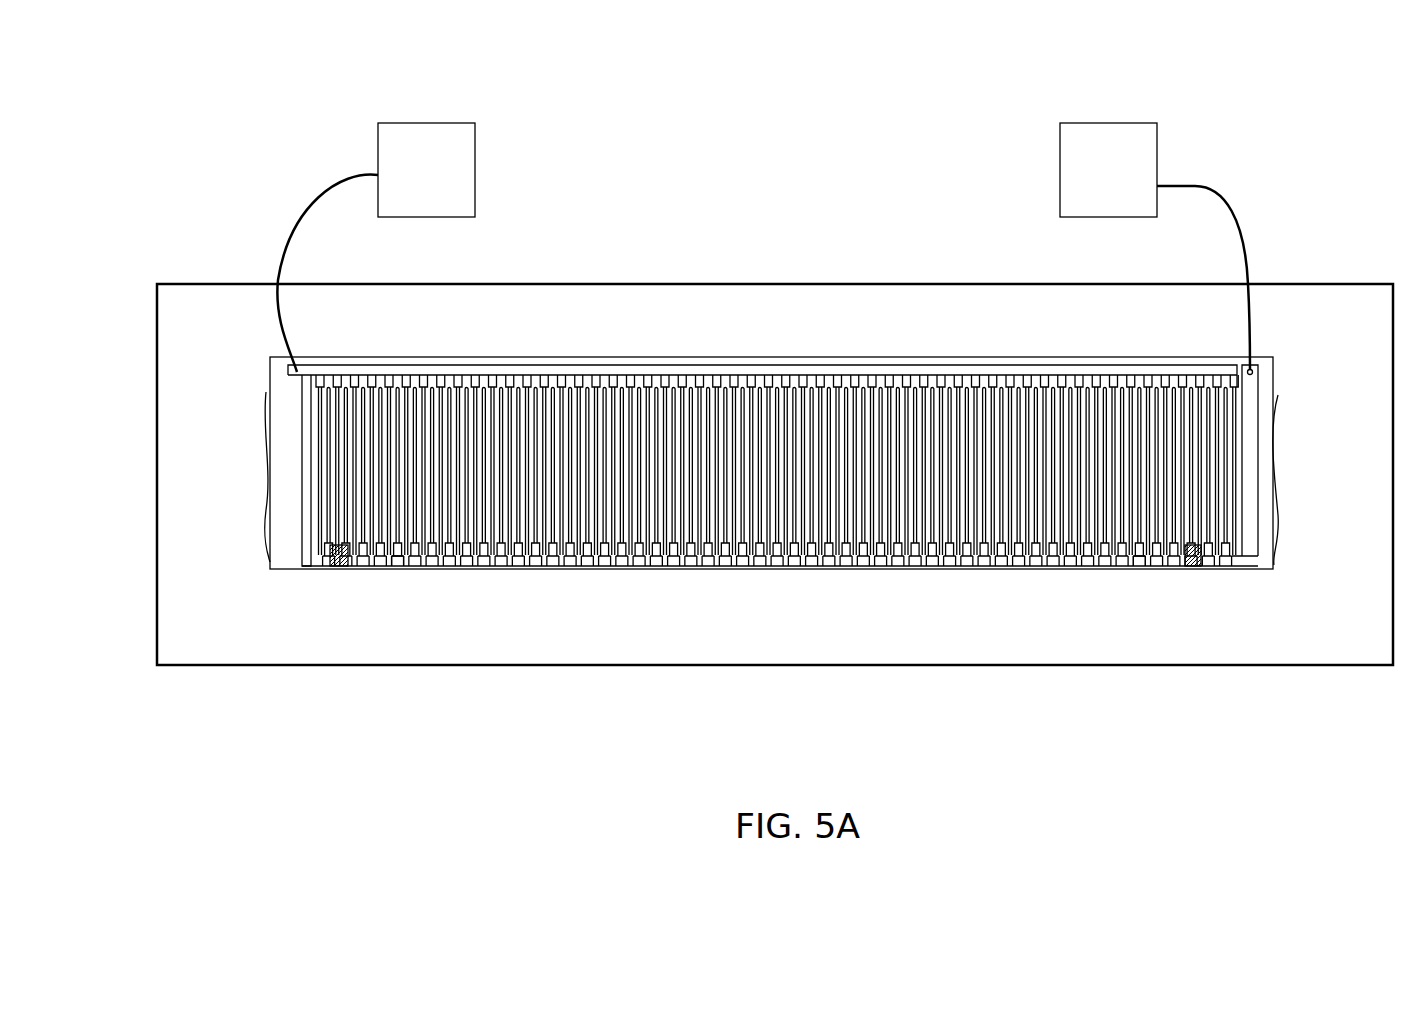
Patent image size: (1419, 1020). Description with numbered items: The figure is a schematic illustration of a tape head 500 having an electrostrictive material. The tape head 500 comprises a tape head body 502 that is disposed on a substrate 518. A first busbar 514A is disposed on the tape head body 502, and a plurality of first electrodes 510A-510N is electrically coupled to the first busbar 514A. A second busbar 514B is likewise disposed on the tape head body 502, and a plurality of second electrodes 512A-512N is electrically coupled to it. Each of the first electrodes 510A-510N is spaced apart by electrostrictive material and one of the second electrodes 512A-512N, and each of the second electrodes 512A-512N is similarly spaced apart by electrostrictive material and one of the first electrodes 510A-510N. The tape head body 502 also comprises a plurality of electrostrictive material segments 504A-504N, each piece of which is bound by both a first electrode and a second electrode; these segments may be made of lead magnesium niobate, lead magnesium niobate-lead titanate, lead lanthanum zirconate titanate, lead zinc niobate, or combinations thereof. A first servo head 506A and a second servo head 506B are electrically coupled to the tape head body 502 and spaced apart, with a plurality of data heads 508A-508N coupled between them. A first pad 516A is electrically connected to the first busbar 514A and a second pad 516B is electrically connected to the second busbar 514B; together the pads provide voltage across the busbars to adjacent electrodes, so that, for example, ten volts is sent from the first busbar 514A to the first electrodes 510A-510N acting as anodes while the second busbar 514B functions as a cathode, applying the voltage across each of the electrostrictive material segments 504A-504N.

The tape head 500 is at (233, 72).
The tape head body 502 is at (983, 357).
The electrostrictive material segment 504A is at (303, 524).
The electrostrictive material segment 504N is at (1246, 456).
The first servo head 506A is at (340, 570).
The second servo head 506B is at (1196, 570).
The data head 508A is at (398, 570).
The data head 508N is at (1135, 570).
The first electrode 510A is at (308, 480).
The first electrode 510N is at (1228, 488).
The second electrode 512A is at (312, 455).
The second electrode 512N is at (1240, 525).
The first busbar 514A is at (350, 373).
The second busbar 514B is at (1248, 557).
The first pad 516A is at (462, 181).
The second pad 516B is at (1143, 181).
The substrate 518 is at (835, 335).